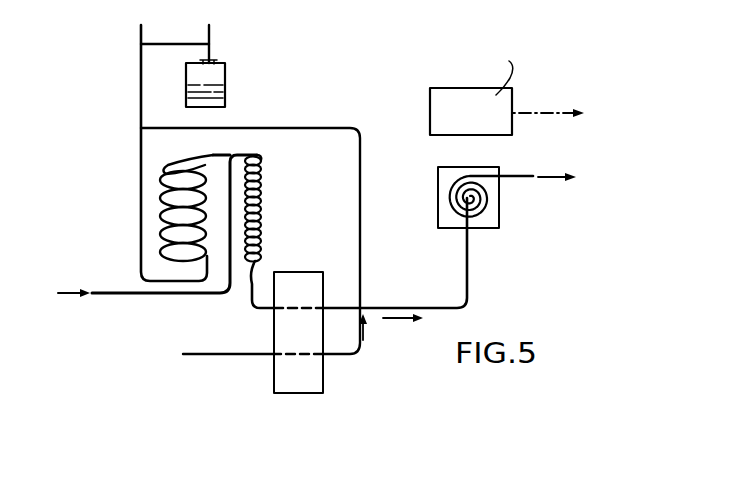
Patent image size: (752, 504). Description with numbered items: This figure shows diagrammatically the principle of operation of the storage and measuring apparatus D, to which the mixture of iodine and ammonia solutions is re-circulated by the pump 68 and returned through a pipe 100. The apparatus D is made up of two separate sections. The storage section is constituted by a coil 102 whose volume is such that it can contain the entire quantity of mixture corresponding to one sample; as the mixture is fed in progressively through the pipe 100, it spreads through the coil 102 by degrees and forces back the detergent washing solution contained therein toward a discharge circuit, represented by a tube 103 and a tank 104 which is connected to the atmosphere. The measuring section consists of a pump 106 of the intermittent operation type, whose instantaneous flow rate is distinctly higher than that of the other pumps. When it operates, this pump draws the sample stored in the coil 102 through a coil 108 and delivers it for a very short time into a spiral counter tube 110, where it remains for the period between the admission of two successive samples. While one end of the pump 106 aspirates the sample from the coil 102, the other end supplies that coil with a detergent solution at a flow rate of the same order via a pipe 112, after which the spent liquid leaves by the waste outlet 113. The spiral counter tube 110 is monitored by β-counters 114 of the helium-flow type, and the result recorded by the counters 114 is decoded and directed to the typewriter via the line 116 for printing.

The pump 68 is at (384, 2).
The storage and measuring apparatus D is at (342, 121).
The pipe 100 is at (122, 292).
The coil 102 is at (160, 215).
The tube 103 is at (141, 102).
The tank 104 is at (225, 96).
The pump 106 is at (302, 299).
The coil 108 is at (280, 222).
The spiral counter tube 110 is at (480, 213).
The pipe 112 is at (380, 222).
The waste line 113 is at (520, 179).
The β-counters 114 is at (476, 124).
The line 116 is at (565, 113).